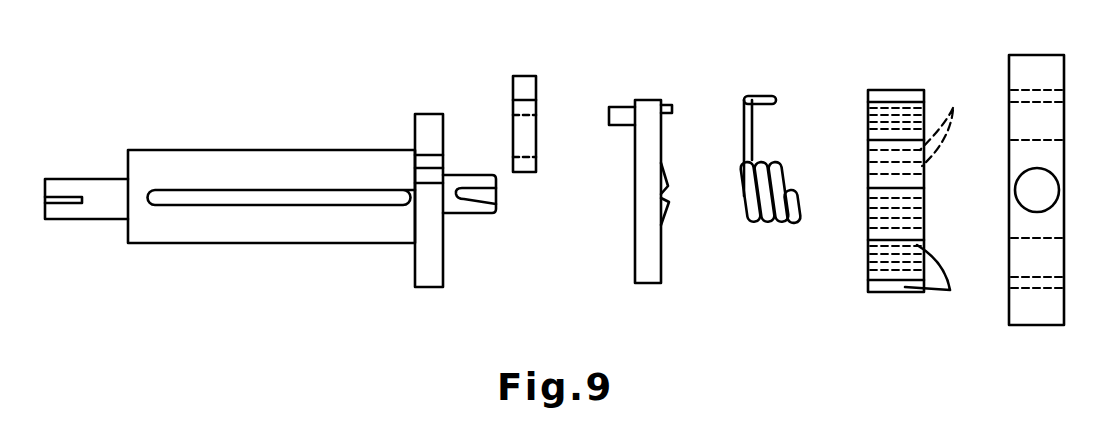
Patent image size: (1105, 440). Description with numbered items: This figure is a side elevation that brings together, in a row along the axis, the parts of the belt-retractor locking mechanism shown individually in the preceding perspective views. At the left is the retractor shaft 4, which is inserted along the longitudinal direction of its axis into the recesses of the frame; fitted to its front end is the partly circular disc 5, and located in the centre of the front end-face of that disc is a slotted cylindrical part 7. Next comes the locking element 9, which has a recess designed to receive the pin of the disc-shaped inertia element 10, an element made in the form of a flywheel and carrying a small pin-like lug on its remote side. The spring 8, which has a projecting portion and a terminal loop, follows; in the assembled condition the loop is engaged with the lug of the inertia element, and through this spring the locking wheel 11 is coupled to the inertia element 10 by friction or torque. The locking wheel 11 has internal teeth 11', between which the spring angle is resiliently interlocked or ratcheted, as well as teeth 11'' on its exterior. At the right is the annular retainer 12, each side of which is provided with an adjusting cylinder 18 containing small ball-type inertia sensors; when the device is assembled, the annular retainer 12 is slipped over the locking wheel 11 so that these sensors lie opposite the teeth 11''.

The retractor shaft 4 is at (280, 150).
The partly circular disc 5 is at (428, 119).
The slotted cylindrical part 7 is at (466, 178).
The spring 8 is at (752, 100).
The locking element 9 is at (521, 76).
The inertia element 10 is at (650, 100).
The locking wheel 11 is at (896, 156).
The internal teeth 11' is at (949, 124).
The teeth 11'' is at (946, 283).
The annular retainer 12 is at (1033, 55).
The adjusting cylinder 18 is at (1053, 183).